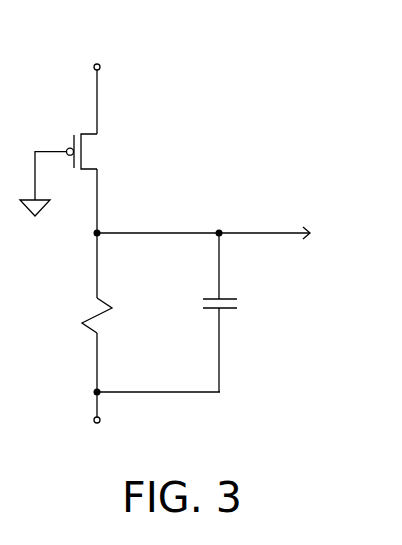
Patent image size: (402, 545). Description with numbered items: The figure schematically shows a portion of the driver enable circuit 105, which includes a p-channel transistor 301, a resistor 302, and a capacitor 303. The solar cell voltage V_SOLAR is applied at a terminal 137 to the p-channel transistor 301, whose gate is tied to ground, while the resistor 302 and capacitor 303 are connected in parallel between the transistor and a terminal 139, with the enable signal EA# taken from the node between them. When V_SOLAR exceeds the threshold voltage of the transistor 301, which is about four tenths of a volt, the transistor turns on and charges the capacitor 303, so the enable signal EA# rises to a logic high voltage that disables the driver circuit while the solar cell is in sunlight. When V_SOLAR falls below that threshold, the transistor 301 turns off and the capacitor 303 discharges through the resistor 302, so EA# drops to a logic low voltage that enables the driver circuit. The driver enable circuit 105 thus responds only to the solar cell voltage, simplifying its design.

The driver enable circuit 105 is at (269, 64).
The solar voltage input terminal (V_SOLAR) 137 is at (100, 69).
The p-channel transistor 301 is at (90, 132).
The resistor 302 is at (95, 313).
The capacitor 303 is at (227, 299).
The output terminal 139 is at (100, 422).